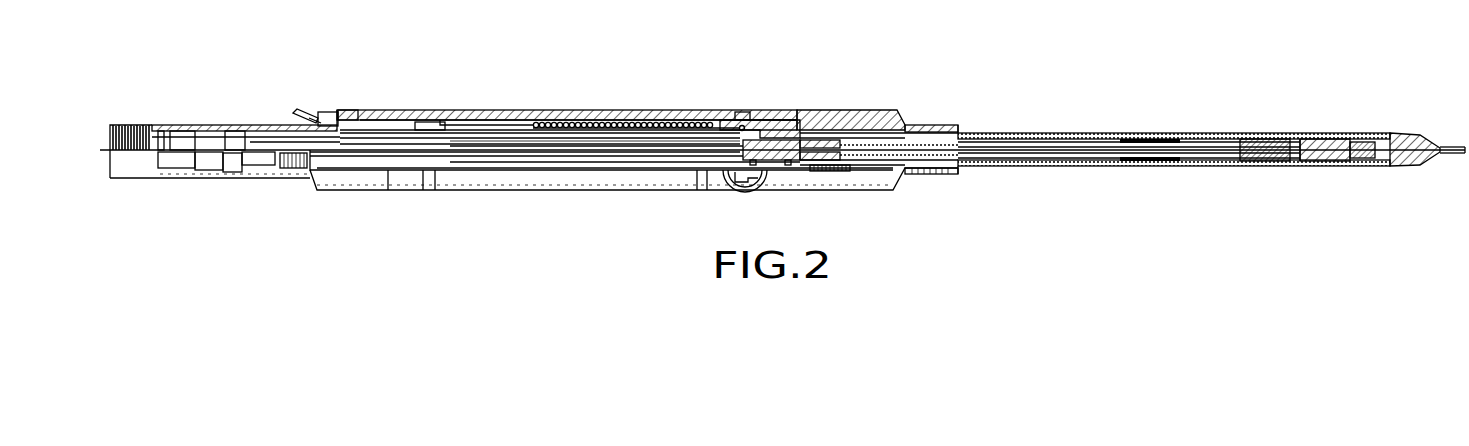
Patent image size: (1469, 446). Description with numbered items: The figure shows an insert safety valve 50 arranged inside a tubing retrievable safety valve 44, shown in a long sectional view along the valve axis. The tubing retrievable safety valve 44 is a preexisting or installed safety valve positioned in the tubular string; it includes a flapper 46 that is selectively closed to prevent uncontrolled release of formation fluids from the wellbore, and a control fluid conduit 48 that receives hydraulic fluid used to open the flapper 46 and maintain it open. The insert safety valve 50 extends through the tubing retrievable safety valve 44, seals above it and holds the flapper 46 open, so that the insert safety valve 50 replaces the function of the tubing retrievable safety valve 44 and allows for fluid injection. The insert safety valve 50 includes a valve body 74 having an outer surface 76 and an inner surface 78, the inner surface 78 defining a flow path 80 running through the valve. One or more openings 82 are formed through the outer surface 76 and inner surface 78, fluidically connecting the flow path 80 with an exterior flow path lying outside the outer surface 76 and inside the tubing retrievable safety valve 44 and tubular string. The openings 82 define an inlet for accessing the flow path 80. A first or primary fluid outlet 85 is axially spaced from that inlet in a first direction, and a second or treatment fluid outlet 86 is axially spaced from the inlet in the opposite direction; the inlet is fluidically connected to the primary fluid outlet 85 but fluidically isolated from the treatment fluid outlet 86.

The tubing retrievable safety valve 44 is at (596, 76).
The flapper 46 is at (758, 124).
The control fluid conduit 48 is at (312, 118).
The insert safety valve 50 is at (1070, 192).
The valve body 74 is at (998, 188).
The outer surface 76 is at (650, 137).
The inner surface 78 is at (510, 138).
The flow path 80 is at (475, 146).
The openings 82 is at (772, 135).
The primary fluid outlet 85 is at (222, 145).
The treatment fluid outlet 86 is at (1447, 153).